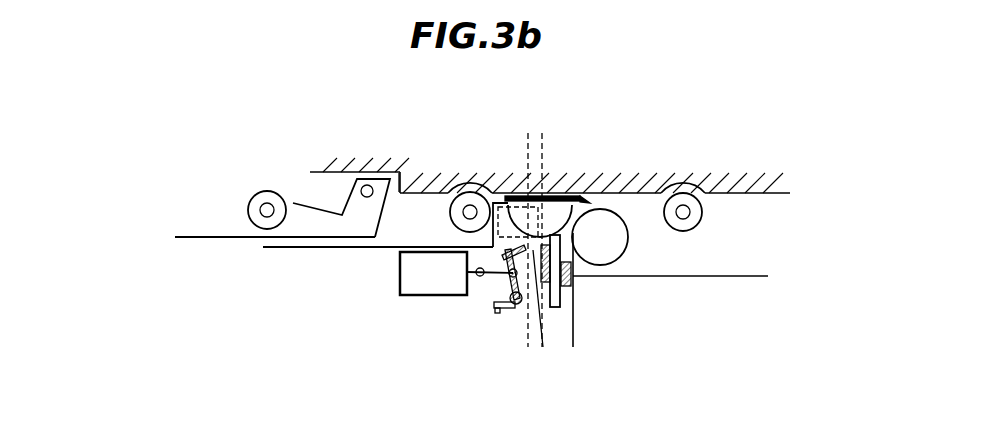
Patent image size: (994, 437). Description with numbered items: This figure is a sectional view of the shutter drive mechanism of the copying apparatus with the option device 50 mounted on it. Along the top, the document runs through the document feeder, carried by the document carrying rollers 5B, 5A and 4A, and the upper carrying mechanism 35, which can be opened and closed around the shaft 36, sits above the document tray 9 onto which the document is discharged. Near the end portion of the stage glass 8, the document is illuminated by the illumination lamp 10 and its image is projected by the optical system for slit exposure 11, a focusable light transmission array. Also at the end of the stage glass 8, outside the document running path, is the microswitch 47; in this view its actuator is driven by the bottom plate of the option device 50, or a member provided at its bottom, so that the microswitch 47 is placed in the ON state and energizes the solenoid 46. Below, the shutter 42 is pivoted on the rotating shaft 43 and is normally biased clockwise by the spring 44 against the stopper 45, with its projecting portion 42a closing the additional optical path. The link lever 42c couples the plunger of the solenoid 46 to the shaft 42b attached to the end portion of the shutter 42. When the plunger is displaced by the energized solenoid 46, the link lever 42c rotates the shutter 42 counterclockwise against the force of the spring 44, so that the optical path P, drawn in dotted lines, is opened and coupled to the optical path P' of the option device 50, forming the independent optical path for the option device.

The document carrying roller 5B is at (253, 197).
The shaft 36 is at (363, 186).
The upper carrying mechanism 35 is at (314, 239).
The document tray 9 is at (337, 249).
The option device 50 is at (412, 196).
The document carrying roller 5A is at (455, 222).
The document carrying roller 4A is at (694, 221).
The illumination lamp 10 is at (627, 245).
The shutter 42 is at (493, 200).
The stage glass 8 is at (519, 193).
The microswitch 47 is at (573, 195).
The optical path of option device P' is at (565, 221).
The optical path P is at (547, 278).
The solenoid 46 is at (400, 274).
The link lever 42c is at (490, 293).
The spring 44 is at (495, 306).
The stopper 45 is at (500, 311).
The rotating shaft 43 is at (521, 243).
The shaft 42b is at (523, 243).
The optical system for slit exposure 11 is at (561, 291).
The projecting portion 42a is at (556, 310).